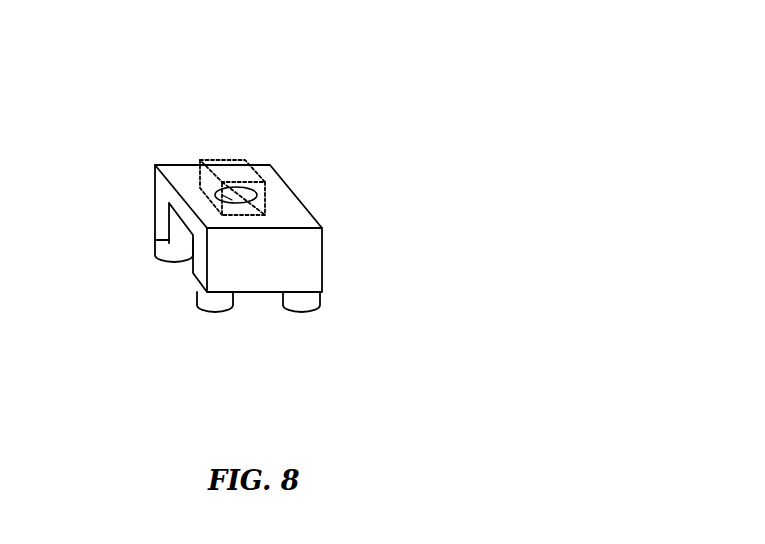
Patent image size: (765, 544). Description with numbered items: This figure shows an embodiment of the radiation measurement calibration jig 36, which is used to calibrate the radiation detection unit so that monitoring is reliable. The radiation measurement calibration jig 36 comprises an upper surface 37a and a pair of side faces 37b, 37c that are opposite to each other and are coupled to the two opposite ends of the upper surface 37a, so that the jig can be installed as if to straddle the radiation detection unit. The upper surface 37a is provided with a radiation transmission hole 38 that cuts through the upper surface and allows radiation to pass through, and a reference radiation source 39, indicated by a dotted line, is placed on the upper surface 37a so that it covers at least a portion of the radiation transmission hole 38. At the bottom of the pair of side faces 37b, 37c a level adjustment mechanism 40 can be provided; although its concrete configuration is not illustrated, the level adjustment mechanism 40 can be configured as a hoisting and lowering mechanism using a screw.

The radiation measurement calibration jig 36 is at (305, 148).
The upper surface 37a is at (292, 210).
The side face 37b is at (160, 239).
The side face 37c is at (265, 270).
The radiation transmission hole 38 is at (222, 198).
The reference radiation source 39 is at (233, 172).
The level adjustment mechanism 40 is at (200, 301).